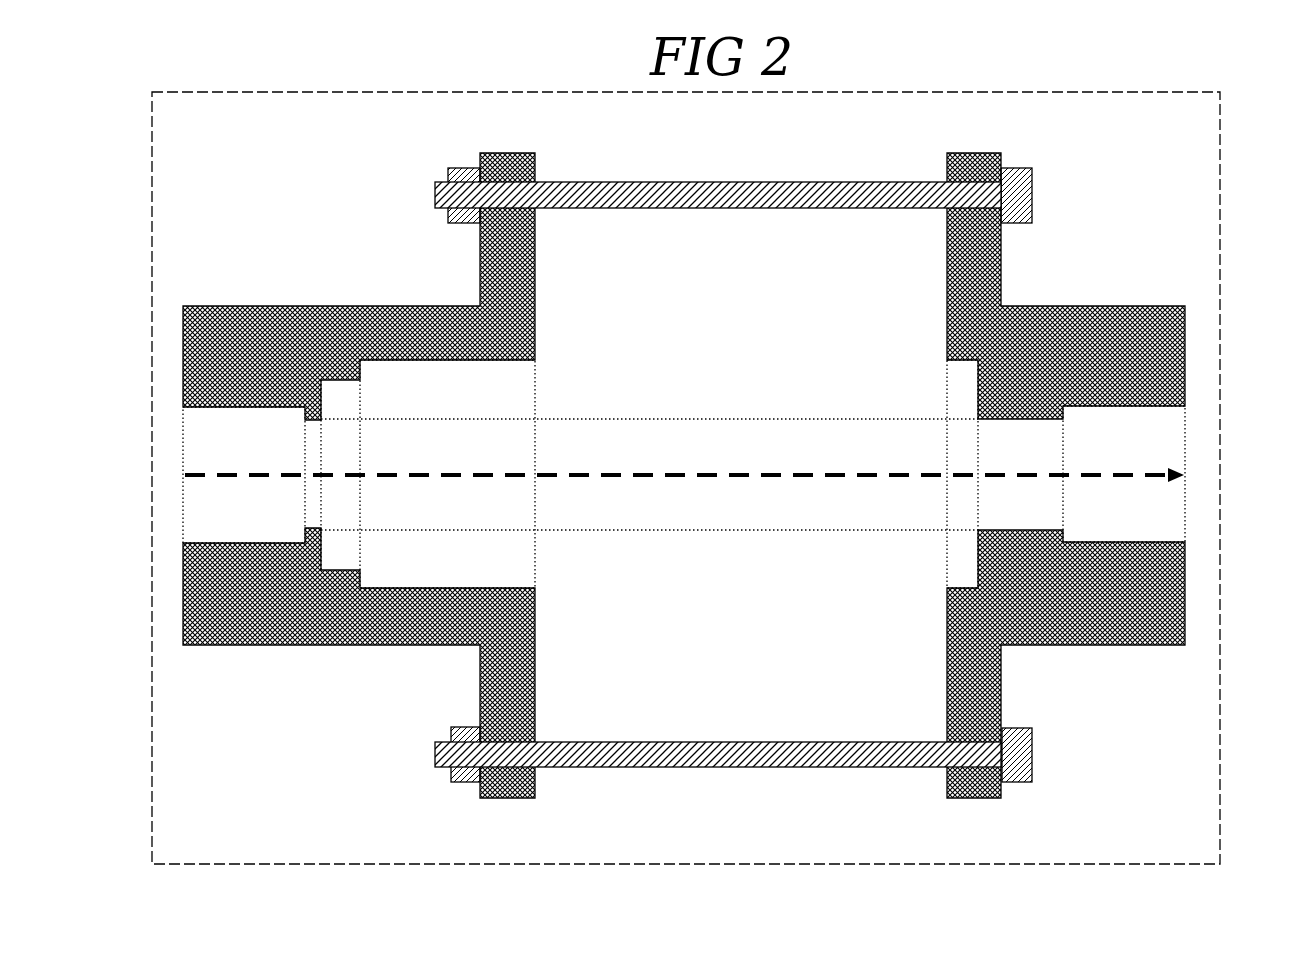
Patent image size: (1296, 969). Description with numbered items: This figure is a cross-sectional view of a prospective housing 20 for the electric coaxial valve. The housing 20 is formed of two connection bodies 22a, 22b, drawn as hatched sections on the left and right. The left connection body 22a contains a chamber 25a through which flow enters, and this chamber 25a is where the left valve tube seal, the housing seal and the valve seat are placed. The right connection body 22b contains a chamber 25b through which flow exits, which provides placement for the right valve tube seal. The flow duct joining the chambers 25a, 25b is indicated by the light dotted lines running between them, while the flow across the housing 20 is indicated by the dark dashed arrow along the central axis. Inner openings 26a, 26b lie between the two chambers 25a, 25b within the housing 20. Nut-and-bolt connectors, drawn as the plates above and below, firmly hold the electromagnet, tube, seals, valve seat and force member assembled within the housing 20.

The housing 20 is at (1220, 478).
The connection body 22a is at (277, 623).
The connection body 22b is at (1113, 330).
The chamber 25a is at (230, 450).
The chamber 25b is at (1112, 498).
The first cavity 26a is at (505, 401).
The second cavity 26b is at (963, 403).